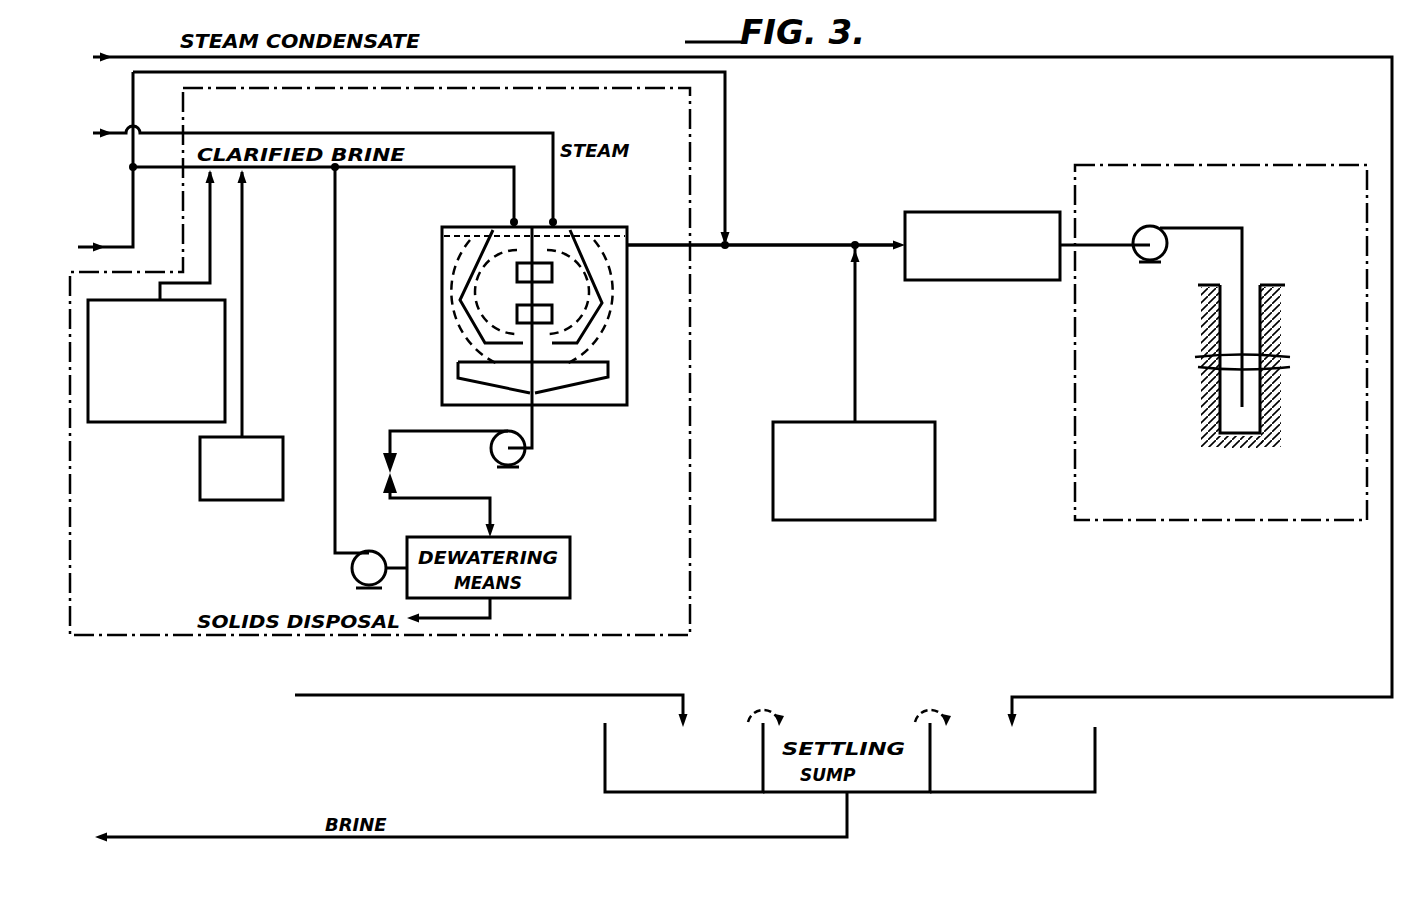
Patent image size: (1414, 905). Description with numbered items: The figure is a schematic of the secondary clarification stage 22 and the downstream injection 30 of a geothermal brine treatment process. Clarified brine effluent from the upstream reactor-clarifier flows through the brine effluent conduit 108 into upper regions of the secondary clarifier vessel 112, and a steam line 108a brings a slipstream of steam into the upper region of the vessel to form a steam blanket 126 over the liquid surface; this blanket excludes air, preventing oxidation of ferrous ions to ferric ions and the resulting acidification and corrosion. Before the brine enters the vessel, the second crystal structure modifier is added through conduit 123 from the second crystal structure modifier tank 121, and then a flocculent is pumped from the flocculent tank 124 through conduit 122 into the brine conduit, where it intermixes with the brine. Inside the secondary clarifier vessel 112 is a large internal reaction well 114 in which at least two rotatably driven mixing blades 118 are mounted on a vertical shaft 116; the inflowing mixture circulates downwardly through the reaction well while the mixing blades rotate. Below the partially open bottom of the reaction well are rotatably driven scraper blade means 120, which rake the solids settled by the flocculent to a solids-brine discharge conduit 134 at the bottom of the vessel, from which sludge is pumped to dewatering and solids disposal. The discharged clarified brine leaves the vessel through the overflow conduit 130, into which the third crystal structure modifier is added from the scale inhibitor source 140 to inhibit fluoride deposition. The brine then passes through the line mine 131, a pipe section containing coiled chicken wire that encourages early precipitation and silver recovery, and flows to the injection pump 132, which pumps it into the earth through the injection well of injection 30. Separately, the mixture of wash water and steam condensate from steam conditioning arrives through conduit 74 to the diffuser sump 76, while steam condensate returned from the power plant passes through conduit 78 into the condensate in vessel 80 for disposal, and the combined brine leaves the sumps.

The secondary clarification stage 22 is at (692, 363).
The injection 30 is at (1221, 321).
The conduit from steam conditioning 74 is at (565, 695).
The diffuser sump 76 is at (605, 757).
The conduit 78 is at (1215, 697).
The condensate in vessel 80 is at (1095, 765).
The brine effluent conduit 108 is at (126, 250).
The steam condensate line 108a is at (725, 105).
The secondary clarifier vessel 112 is at (627, 335).
The reaction well 114 is at (466, 312).
The vertical shaft 116 is at (533, 298).
The mixing blades 118 is at (550, 315).
The scraper blade means 120 is at (610, 373).
The second crystal structure modifier tank 121 is at (160, 422).
The conduit 122 is at (244, 303).
The conduit 123 is at (160, 283).
The flocculent tank 124 is at (265, 500).
The steam blanket 126 is at (457, 227).
The overflow conduit 130 is at (770, 245).
The line mine 131 is at (990, 212).
The injection pump 132 is at (1143, 228).
The solids-brine discharge conduit 134 is at (523, 460).
The third scale inhibitor 140 is at (897, 422).